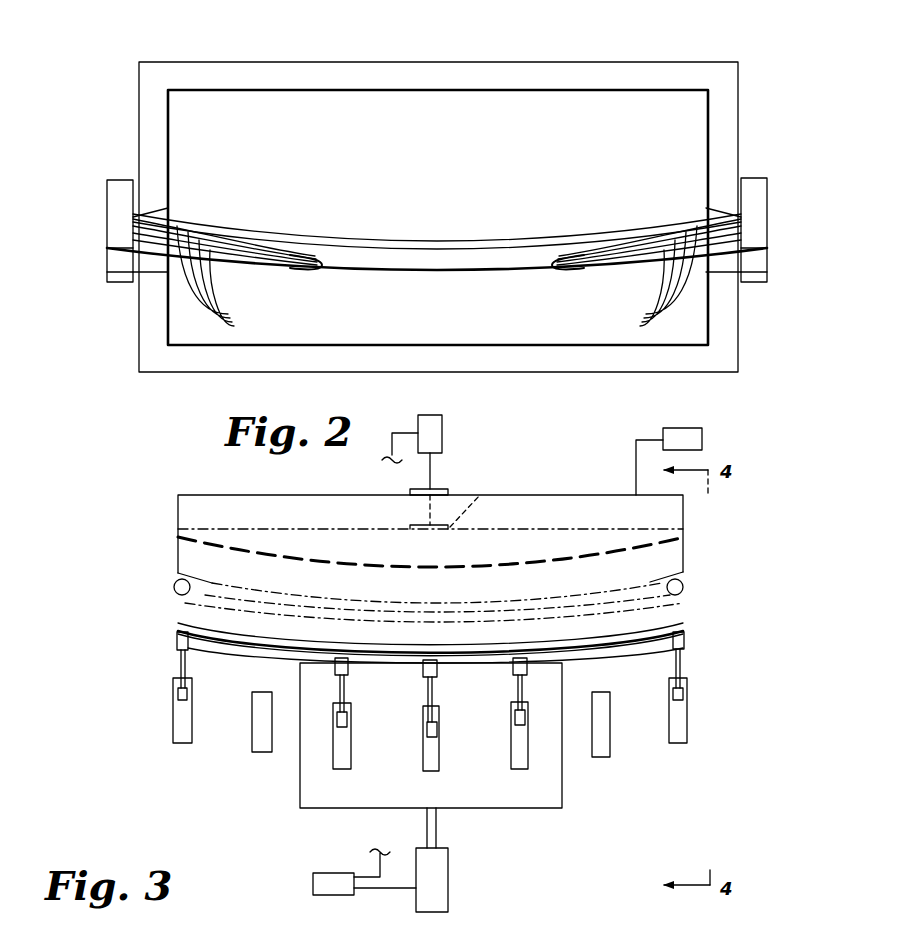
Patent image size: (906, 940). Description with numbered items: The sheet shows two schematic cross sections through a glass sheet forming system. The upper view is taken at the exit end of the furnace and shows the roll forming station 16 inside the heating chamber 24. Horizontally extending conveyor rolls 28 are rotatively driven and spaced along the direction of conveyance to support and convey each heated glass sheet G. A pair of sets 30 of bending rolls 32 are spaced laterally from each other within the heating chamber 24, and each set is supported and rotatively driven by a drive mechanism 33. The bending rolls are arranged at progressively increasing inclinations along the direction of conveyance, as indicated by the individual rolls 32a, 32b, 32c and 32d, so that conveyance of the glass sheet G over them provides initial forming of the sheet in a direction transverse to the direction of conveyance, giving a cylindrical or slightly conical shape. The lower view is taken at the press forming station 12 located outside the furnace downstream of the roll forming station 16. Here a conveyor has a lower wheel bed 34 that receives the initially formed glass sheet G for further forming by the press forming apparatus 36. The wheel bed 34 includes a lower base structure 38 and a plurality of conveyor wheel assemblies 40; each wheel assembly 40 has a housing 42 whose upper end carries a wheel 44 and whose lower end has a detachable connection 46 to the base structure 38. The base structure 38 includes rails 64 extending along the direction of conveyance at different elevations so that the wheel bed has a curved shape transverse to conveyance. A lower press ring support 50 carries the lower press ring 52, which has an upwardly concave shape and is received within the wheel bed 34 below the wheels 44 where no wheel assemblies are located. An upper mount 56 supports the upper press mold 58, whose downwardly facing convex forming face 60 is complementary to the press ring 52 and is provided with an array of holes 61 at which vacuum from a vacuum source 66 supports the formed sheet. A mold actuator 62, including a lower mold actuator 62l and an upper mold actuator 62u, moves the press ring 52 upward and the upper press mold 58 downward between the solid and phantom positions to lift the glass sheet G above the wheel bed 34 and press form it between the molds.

In FIG. 3, the press forming station 12 is at (605, 456).
In FIG. 2, the roll forming station 16 is at (541, 56).
In FIG. 2, the heating chamber 24 is at (280, 100).
In FIG. 2, the conveyor rolls 28 is at (430, 272).
In FIG. 2, the sets of bending rolls 30 is at (184, 205).
In FIG. 2, the bending rolls 32 is at (437, 232).
In FIG. 2, the bending roll 32a is at (235, 246).
In FIG. 2, the bending roll 32b is at (220, 232).
In FIG. 2, the bending roll 32c is at (212, 222).
In FIG. 2, the bending roll 32d is at (202, 214).
In FIG. 2, the drive mechanism 33 is at (115, 200).
In FIG. 3, the lower wheel bed 34 is at (702, 636).
In FIG. 3, the press forming apparatus 36 is at (693, 657).
In FIG. 3, the lower base structure 38 is at (697, 720).
In FIG. 3, the conveyor wheel assemblies 40 is at (169, 690).
In FIG. 3, the housing 42 is at (182, 670).
In FIG. 3, the wheel 44 is at (177, 644).
In FIG. 3, the detachable connection 46 is at (178, 694).
In FIG. 3, the lower press ring support 50 is at (299, 806).
In FIG. 3, the lower press ring 52 is at (174, 587).
In FIG. 3, the upper mount 56 is at (450, 492).
In FIG. 3, the upper press mold 58 is at (690, 560).
In FIG. 3, the forming face 60 is at (577, 596).
In FIG. 3, the holes 61 is at (385, 560).
In FIG. 3, the mold actuator 62 is at (303, 881).
In FIG. 3, the upper mold actuator 62u is at (442, 432).
In FIG. 3, the lower mold actuator 62l is at (448, 883).
In FIG. 3, the rails 64 is at (192, 728).
In FIG. 3, the vacuum source 66 is at (702, 438).
In FIG. 2, the glass sheet G is at (408, 238).
In FIG. 3, the glass sheet G is at (212, 623).